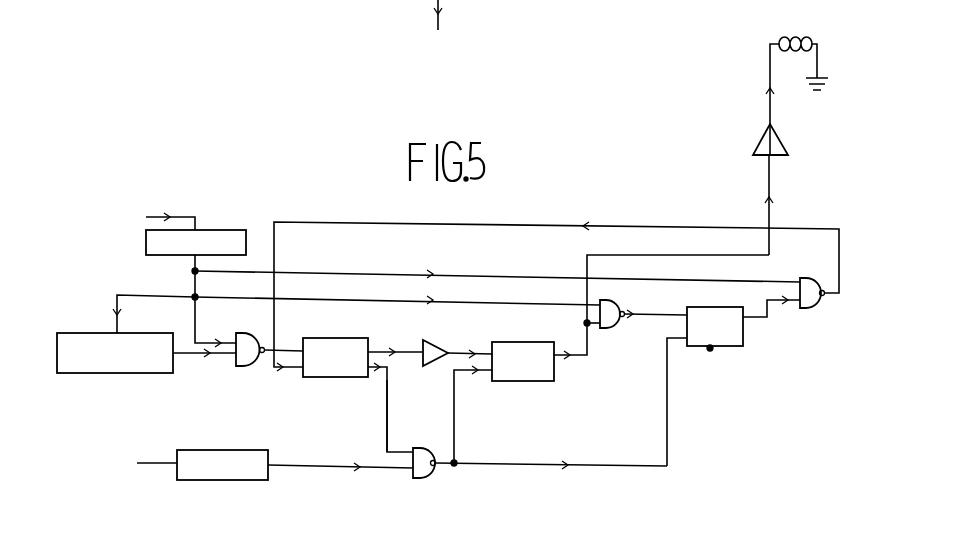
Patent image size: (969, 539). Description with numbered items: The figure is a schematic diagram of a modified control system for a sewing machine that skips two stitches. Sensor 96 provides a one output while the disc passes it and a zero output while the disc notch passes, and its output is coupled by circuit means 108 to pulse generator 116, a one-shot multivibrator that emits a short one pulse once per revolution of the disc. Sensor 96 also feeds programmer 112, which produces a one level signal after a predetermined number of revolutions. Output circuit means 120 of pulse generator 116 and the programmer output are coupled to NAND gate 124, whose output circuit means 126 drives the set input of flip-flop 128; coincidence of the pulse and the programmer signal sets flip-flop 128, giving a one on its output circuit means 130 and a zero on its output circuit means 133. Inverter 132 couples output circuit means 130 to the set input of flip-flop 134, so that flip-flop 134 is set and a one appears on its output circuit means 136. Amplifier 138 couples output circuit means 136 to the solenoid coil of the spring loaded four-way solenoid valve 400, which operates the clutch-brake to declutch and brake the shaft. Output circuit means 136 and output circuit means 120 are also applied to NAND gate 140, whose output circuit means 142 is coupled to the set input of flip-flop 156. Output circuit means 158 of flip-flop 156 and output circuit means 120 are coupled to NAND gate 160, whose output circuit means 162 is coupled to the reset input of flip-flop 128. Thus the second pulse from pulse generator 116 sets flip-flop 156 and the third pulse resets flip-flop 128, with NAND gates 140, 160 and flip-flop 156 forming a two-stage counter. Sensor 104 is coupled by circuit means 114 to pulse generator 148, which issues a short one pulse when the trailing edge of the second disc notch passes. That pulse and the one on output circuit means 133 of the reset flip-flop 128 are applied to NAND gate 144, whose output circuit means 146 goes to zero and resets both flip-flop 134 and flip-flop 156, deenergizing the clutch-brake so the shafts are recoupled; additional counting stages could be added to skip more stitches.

The sensor 96 is at (129, 227).
The sensor 104 is at (120, 475).
The circuit means 108 is at (440, 20).
The programmer 112 is at (128, 373).
The circuit means 114 is at (338, 470).
The pulse generator 116 is at (224, 229).
The output circuit means 120 is at (230, 272).
The NAND gate 124 is at (241, 366).
The output circuit means 126 is at (266, 346).
The flip-flop 128 is at (337, 337).
The output circuit means 130 is at (392, 340).
The inverter 132 is at (436, 367).
The output circuit means 133 is at (387, 414).
The flip-flop 134 is at (528, 340).
The output circuit means 136 is at (583, 358).
The amplifier 138 is at (785, 140).
The NAND gate 140 is at (606, 328).
The output circuit means 142 is at (650, 320).
The NAND gate 144 is at (425, 478).
The output circuit means 146 is at (440, 466).
The pulse generator 148 is at (229, 480).
The flip-flop 156 is at (720, 348).
The output circuit means 158 is at (758, 322).
The NAND gate 160 is at (812, 306).
The output circuit means 162 is at (839, 262).
The solenoid valve 400 is at (795, 42).